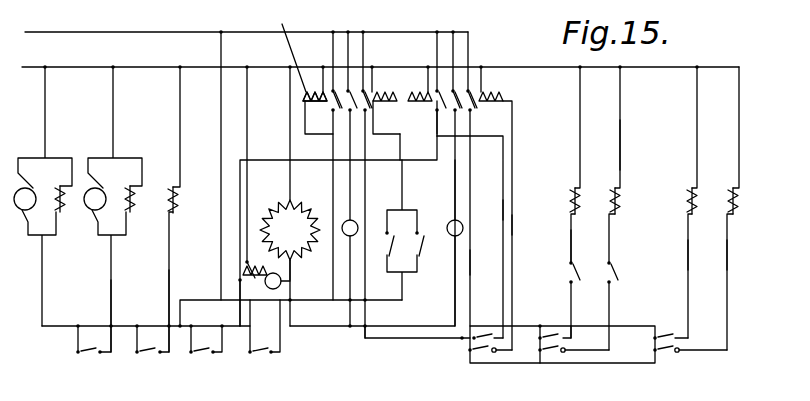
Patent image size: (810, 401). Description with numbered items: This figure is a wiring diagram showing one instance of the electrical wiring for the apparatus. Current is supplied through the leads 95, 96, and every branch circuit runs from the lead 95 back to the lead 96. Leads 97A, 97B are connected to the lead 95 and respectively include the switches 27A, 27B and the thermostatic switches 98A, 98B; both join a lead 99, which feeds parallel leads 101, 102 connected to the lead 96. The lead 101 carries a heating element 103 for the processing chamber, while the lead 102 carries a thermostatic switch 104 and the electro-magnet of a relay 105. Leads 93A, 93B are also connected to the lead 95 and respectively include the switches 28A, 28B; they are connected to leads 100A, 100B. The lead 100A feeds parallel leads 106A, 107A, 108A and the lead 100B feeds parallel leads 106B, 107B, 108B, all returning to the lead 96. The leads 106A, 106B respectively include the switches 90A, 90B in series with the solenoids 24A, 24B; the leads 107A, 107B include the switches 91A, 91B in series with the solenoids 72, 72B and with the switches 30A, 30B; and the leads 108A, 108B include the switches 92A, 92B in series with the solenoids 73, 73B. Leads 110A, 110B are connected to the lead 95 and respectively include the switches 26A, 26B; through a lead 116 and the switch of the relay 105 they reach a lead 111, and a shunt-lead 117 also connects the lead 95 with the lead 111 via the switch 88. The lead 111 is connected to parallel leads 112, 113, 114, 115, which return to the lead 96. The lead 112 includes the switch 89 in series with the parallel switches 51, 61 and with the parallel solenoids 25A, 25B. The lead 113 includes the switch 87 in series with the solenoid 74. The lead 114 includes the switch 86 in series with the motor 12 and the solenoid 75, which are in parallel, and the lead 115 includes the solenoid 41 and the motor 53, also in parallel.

The current supply lead 95 is at (68, 26).
The current supply lead 96 is at (88, 62).
The solenoid 24A is at (289, 55).
The solenoid 24B is at (492, 100).
The lead 110A is at (333, 45).
The lead 110B is at (437, 45).
The lead 97A is at (348, 45).
The lead 97B is at (453, 45).
The lead 93A is at (363, 45).
The lead 93B is at (470, 45).
The switch 27A is at (352, 100).
The switch 27B is at (457, 95).
The switch 28A is at (366, 100).
The switch 28B is at (473, 100).
The solenoid 25A is at (383, 92).
The solenoid 25B is at (400, 110).
The switch 26A is at (333, 108).
The switch 26B is at (430, 105).
The lead 102 is at (247, 125).
The lead 116 is at (247, 160).
The shunt-lead 117 is at (221, 160).
The solenoid 75 is at (135, 186).
The solenoid 41 is at (61, 189).
The solenoid 74 is at (173, 190).
The motor 53 is at (22, 212).
The motor 12 is at (92, 212).
The lead 101 is at (289, 178).
The heating element 103 is at (292, 203).
The thermostatic switch 98A is at (344, 222).
The thermostatic switch 98B is at (451, 221).
The relay 105 is at (240, 262).
The thermostatic switch 104 is at (270, 290).
The lead 113 is at (169, 270).
The lead 114 is at (111, 275).
The lead 115 is at (42, 280).
The lead 112 is at (195, 294).
The lead 111 is at (214, 326).
The lead 99 is at (325, 326).
The lead 100A is at (417, 344).
The lead 100B is at (471, 263).
The switch 51 is at (390, 250).
The switch 61 is at (422, 250).
The lead 106A is at (503, 210).
The lead 106B is at (513, 224).
The solenoid 72 is at (578, 190).
The solenoid 72B is at (619, 197).
The solenoid 73 is at (692, 192).
The solenoid 73B is at (735, 197).
The lead 107A is at (571, 245).
The lead 107B is at (620, 170).
The lead 108A is at (690, 250).
The lead 108B is at (727, 256).
The switch 30A is at (572, 270).
The switch 30B is at (610, 275).
The switch 90A is at (484, 335).
The switch 90B is at (486, 358).
The switch 91A is at (548, 335).
The switch 91B is at (550, 358).
The switch 92A is at (663, 335).
The switch 92B is at (668, 358).
The switch 86 is at (94, 355).
The switch 87 is at (158, 355).
The switch 88 is at (212, 355).
The switch 89 is at (265, 355).